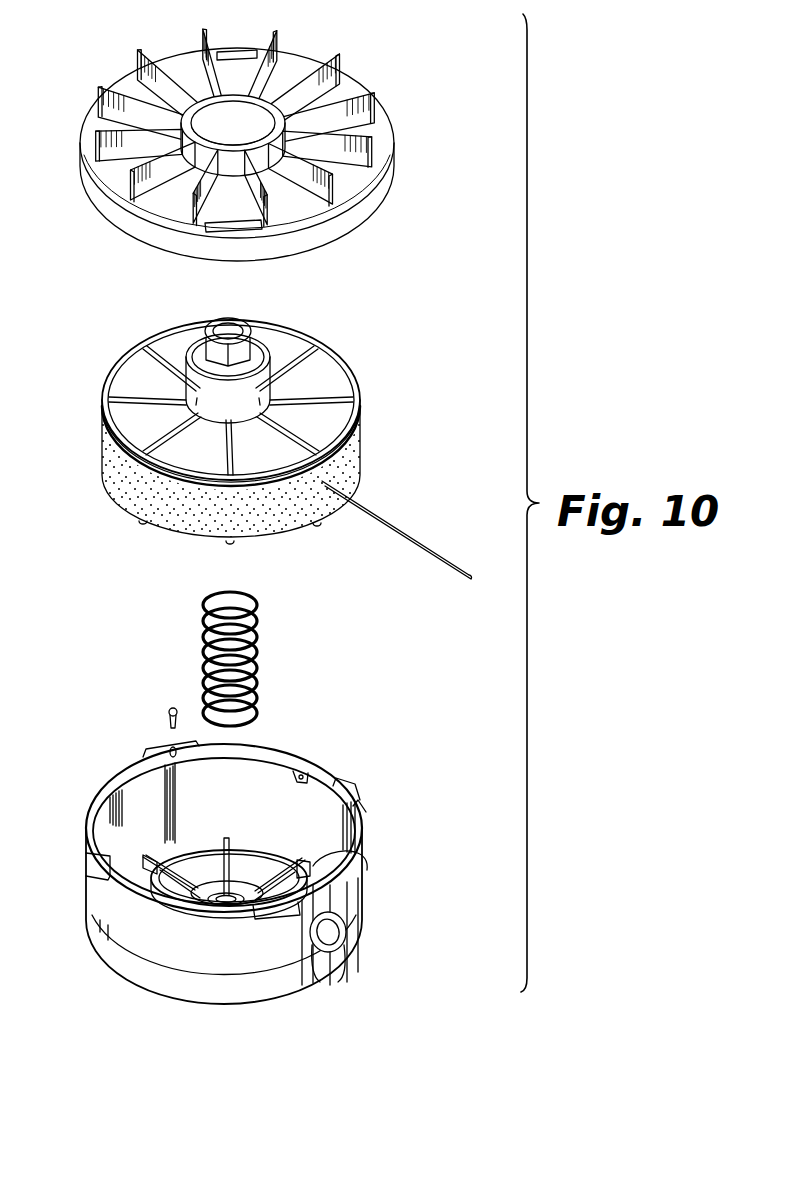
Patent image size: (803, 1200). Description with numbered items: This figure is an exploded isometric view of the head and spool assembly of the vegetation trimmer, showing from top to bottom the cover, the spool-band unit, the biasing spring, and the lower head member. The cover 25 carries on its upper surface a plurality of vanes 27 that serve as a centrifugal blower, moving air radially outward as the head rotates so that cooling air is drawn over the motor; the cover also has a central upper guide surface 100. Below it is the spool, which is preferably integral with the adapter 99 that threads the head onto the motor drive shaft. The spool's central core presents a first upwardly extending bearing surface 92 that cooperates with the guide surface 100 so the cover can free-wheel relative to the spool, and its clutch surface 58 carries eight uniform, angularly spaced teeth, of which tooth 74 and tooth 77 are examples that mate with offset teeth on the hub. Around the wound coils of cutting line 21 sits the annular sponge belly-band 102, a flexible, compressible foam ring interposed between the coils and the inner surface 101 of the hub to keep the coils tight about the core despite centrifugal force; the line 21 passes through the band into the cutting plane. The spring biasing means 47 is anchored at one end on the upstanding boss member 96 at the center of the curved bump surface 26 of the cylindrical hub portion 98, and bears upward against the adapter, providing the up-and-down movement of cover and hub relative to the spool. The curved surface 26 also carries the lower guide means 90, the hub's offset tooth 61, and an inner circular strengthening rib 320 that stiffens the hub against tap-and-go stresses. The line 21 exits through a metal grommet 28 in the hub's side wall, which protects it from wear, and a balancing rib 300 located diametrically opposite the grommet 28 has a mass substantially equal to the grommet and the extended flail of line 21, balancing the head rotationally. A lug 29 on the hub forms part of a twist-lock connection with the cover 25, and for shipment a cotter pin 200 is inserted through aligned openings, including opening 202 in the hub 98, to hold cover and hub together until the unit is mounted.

The cover 25 is at (380, 207).
The vanes 27 is at (340, 70).
The upper guide surface 100 is at (207, 145).
The clutch surface 58 is at (327, 383).
The tooth 74 is at (148, 350).
The first upwardly extending bearing surface 92 is at (197, 405).
The adapter 99 is at (268, 347).
The annular sponge belly-band 102 is at (357, 433).
The tooth 77 is at (232, 550).
The cutting line 21 is at (405, 530).
The spring biasing means 47 is at (268, 655).
The curved bump surface 26 is at (220, 1003).
The cylindrical hub portion 98 is at (140, 960).
The balancing rib 300 is at (133, 823).
The lower guide means 90 is at (197, 860).
The upstanding boss member 96 is at (247, 900).
The inner circular strengthening rib 320 is at (272, 855).
The tooth 61 is at (320, 865).
The lug 29 is at (355, 785).
The inner surface of hub 101 is at (297, 780).
The grommet 28 is at (313, 985).
The cotter pin 200 is at (170, 710).
The opening 202 is at (172, 750).